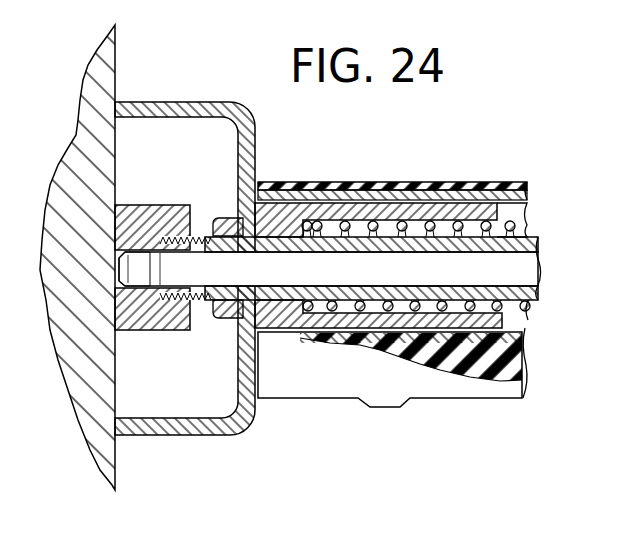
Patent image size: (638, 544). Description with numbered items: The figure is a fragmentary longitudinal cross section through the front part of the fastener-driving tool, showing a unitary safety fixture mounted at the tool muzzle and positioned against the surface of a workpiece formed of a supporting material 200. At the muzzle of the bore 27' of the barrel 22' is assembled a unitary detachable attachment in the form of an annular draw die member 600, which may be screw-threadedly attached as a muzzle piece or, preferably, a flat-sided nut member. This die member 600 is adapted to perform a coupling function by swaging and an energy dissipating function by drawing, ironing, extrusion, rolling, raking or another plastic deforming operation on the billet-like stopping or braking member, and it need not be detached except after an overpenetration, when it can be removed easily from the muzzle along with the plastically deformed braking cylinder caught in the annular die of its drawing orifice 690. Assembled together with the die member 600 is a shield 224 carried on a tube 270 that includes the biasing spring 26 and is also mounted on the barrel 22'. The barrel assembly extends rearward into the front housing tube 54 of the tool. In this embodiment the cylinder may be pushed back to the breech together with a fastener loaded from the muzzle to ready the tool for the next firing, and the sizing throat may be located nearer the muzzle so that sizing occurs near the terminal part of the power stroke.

The supporting material 200 is at (118, 470).
The shield 224 is at (254, 121).
The annular draw die member 600 is at (142, 205).
The drawing orifice 690 is at (118, 268).
The bore 27' is at (328, 269).
The barrel 22' is at (387, 266).
The tube 270 is at (452, 212).
The biasing spring 26 is at (530, 308).
The front housing tube 54 is at (313, 396).